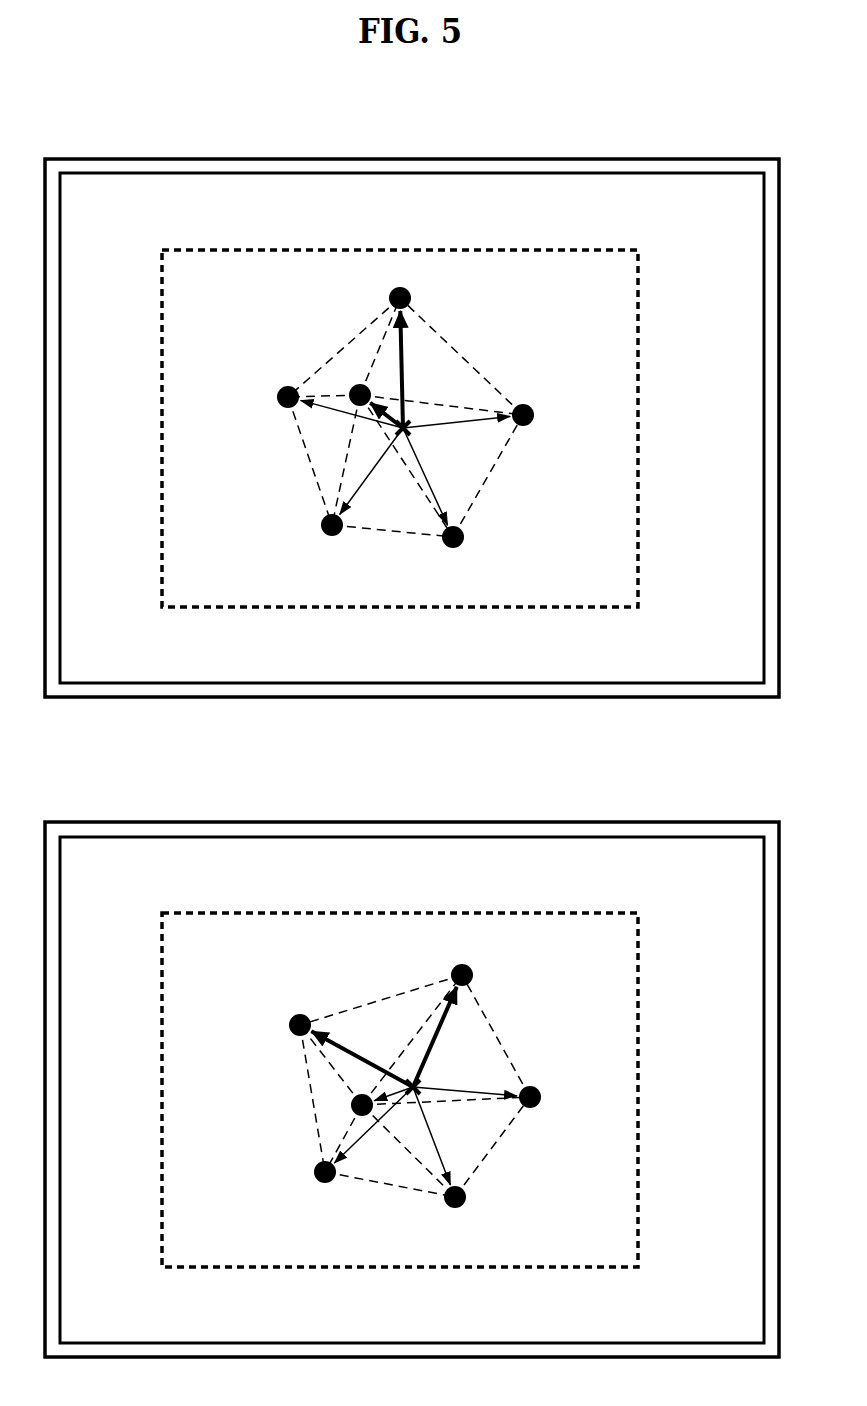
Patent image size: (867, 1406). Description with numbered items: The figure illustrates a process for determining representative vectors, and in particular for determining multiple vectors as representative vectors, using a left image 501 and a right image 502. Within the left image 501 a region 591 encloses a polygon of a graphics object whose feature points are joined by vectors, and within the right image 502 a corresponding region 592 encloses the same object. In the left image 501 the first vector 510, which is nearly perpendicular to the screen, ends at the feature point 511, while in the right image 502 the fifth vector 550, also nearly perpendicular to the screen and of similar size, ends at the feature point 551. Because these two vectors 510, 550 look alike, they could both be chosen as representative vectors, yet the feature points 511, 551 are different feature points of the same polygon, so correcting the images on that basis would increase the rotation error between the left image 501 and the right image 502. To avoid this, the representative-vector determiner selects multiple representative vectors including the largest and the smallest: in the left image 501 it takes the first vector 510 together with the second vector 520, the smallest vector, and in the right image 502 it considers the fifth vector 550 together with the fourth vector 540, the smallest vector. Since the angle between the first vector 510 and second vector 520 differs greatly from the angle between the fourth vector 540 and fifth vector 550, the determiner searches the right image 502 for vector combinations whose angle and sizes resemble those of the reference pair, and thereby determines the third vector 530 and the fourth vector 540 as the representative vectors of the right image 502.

The left image 501 is at (105, 188).
The first tracking region 591 is at (608, 249).
The feature point 511 is at (397, 289).
The first vector 510 is at (403, 333).
The second vector 520 is at (388, 398).
The right image 502 is at (112, 862).
The second tracking region 592 is at (613, 912).
The feature point 551 is at (461, 965).
The third vector 530 is at (340, 1047).
The fourth vector 540 is at (382, 1092).
The fifth vector 550 is at (440, 1028).